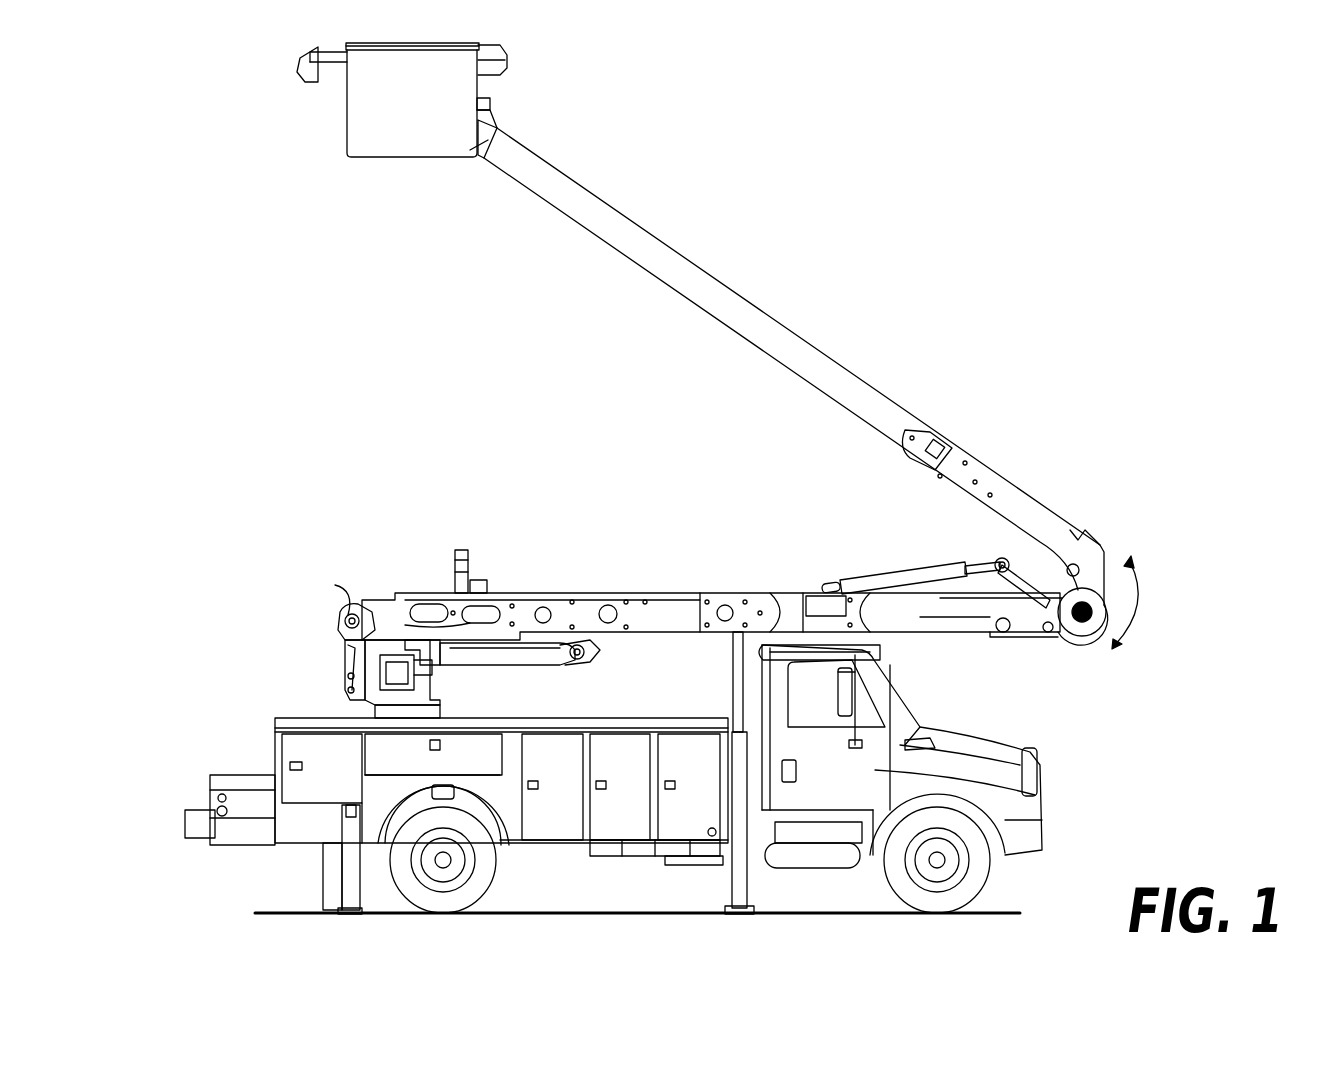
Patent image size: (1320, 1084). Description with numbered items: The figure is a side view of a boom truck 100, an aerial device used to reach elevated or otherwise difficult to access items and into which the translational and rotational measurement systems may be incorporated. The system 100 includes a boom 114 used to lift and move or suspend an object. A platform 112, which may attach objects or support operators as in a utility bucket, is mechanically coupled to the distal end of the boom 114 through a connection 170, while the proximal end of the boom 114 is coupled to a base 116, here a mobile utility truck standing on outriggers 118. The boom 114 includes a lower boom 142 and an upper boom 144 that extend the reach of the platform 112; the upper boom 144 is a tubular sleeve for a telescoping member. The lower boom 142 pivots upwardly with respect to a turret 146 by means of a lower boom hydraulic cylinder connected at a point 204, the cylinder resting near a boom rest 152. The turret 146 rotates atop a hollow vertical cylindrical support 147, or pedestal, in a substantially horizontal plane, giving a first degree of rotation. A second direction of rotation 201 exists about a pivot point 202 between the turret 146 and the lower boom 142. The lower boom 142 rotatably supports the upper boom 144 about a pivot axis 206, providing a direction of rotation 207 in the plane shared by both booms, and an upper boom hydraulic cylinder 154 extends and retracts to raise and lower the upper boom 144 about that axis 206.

The boom truck 100 is at (150, 156).
The platform 112 is at (408, 157).
The boom 114 is at (735, 390).
The base 116 is at (514, 934).
The outriggers 118 is at (350, 870).
The lower boom 142 is at (592, 592).
The upper boom 144 is at (728, 283).
The turret 146 is at (350, 643).
The hollow vertical cylindrical support 147 is at (377, 715).
The boom rest 152 is at (523, 655).
The upper boom hydraulic cylinder 154 is at (900, 572).
The platform pivot 170 is at (490, 118).
The second direction of rotation 201 is at (378, 578).
The pivot point 202 is at (320, 603).
The connection point 204 is at (587, 657).
The pivot axis 206 is at (1082, 625).
The direction of rotation 207 is at (1143, 606).